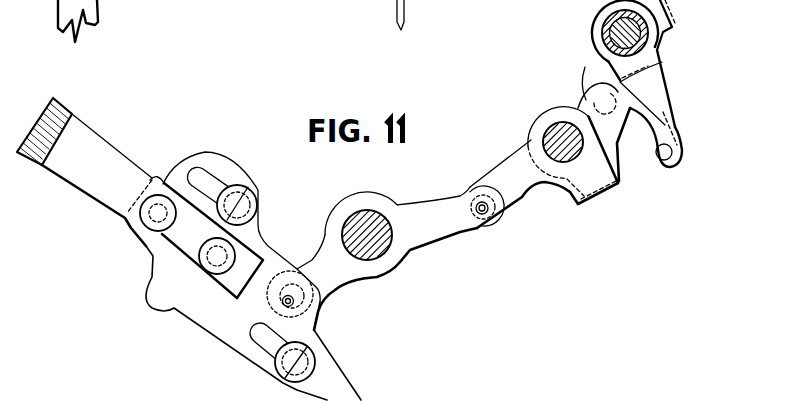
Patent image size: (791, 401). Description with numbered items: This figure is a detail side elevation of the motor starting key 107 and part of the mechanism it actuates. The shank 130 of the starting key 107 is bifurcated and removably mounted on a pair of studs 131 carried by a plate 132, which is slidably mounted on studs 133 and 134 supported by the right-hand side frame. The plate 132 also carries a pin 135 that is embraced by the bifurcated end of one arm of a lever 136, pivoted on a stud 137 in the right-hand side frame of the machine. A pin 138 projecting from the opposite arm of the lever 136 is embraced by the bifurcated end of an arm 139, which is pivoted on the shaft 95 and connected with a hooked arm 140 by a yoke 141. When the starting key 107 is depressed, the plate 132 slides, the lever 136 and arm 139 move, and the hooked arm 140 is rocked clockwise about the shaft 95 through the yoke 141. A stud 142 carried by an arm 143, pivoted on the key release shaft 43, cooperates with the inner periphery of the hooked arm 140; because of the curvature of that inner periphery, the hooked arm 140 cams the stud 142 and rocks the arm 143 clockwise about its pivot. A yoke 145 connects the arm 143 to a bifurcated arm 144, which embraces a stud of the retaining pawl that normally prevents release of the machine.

The starting key 107 is at (106, 162).
The shank 130 is at (231, 288).
The studs 131 is at (198, 272).
The plate 132 is at (270, 250).
The stud 133 is at (246, 207).
The stud 134 is at (306, 366).
The pin 135 is at (284, 304).
The lever 136 is at (388, 262).
The stud 137 is at (383, 231).
The pin 138 is at (483, 217).
The arm 139 is at (514, 208).
The shaft 95 is at (567, 152).
The yoke 141 is at (600, 197).
The arm 143 is at (661, 80).
The hooked arm 140 is at (677, 128).
The stud 142 is at (672, 153).
The bifurcated arm 144 is at (590, 84).
The key release shaft 43 is at (640, 42).
The yoke 145 is at (676, 14).